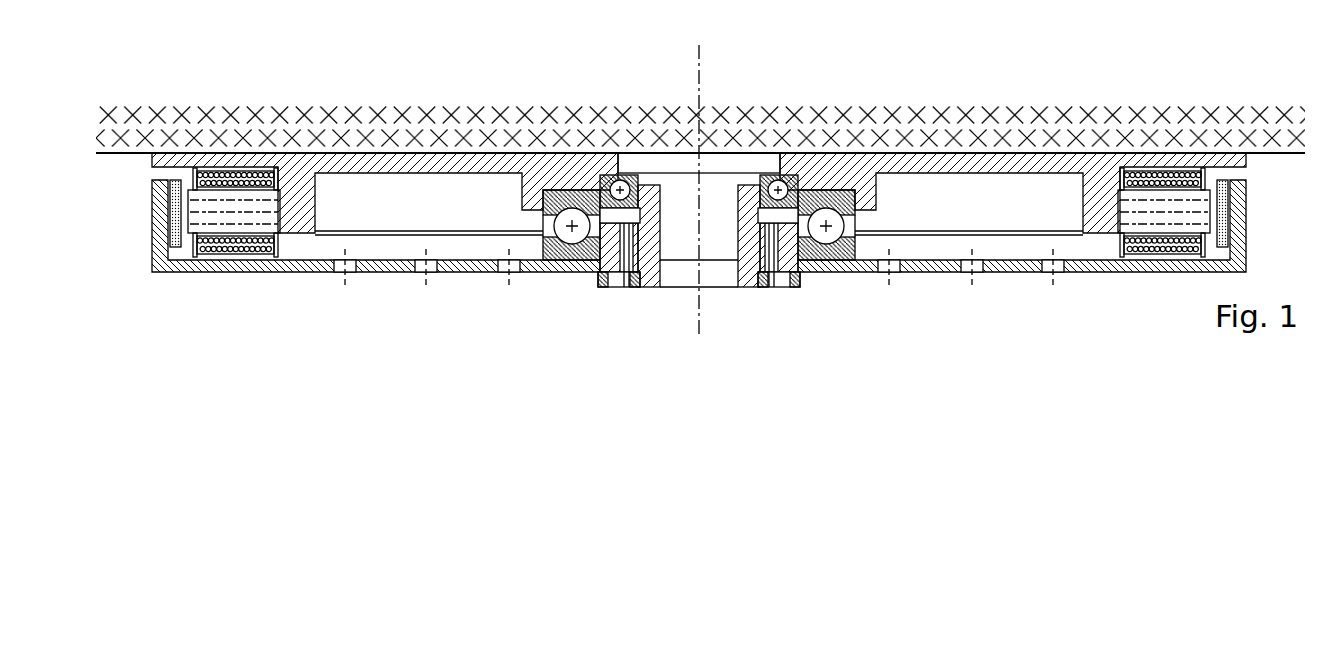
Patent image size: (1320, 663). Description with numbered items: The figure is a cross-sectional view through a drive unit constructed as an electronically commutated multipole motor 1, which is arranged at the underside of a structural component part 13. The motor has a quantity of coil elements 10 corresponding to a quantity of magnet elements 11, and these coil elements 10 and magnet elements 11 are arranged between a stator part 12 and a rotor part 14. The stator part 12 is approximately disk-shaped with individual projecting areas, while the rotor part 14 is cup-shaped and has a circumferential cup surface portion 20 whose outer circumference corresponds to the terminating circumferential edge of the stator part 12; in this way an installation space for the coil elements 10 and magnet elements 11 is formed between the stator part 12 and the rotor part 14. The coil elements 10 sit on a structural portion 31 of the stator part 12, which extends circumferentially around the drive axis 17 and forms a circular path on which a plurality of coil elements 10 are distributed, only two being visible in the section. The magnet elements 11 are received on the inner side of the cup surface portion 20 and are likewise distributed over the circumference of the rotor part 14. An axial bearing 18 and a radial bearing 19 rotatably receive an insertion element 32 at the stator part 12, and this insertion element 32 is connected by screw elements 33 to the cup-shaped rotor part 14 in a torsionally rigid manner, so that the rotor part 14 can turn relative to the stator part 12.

The multipole motor 1 is at (126, 324).
The coil element 10 is at (233, 158).
The magnet element 11 is at (175, 213).
The stator part 12 is at (386, 160).
The structural component part 13 is at (500, 132).
The rotor part 14 is at (275, 273).
The drive axis 17 is at (702, 95).
The axial bearing 18 is at (547, 272).
The radial bearing 19 is at (792, 181).
The cup surface portion 20 is at (160, 248).
The structural portion 31 is at (298, 215).
The insertion element 32 is at (747, 245).
The screw element 33 is at (625, 283).